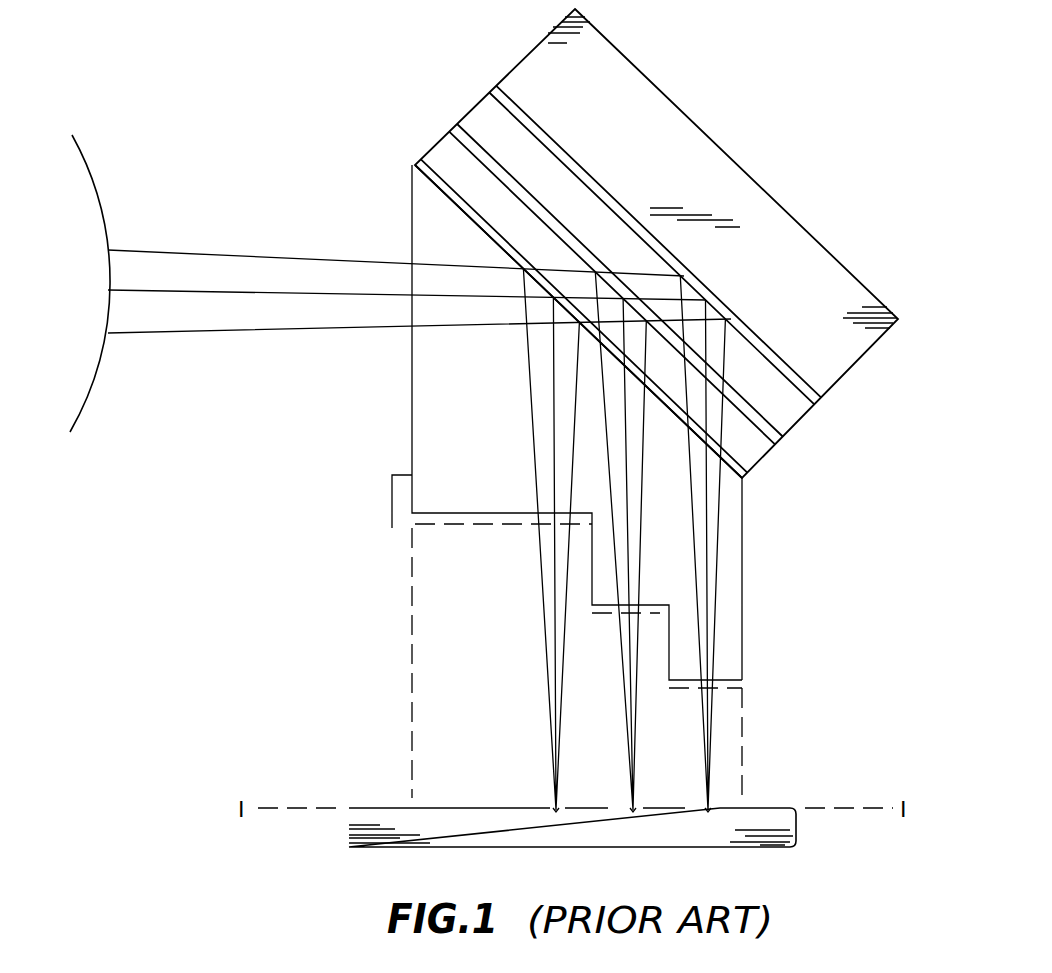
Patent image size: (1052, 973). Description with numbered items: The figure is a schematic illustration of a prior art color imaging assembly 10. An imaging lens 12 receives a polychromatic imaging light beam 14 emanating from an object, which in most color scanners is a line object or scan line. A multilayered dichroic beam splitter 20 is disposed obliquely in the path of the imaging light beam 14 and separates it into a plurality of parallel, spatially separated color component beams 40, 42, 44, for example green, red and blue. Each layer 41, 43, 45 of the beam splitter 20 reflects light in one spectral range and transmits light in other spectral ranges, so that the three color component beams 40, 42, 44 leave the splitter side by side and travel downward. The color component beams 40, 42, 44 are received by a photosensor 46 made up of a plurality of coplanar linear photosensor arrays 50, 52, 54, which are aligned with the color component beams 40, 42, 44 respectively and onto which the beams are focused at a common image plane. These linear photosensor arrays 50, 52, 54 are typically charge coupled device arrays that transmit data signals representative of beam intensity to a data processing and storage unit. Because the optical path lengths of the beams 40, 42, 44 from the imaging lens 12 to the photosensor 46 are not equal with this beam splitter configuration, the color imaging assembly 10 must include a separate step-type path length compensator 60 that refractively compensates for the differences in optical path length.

The color imaging assembly 10 is at (363, 58).
The imaging lens 12 is at (90, 396).
The polychromatic imaging light beam 14 is at (243, 317).
The multilayered dichroic beam splitter 20 is at (750, 186).
The layer 41 is at (432, 183).
The layer 43 is at (458, 143).
The layer 45 is at (497, 100).
The color component beam 40 is at (543, 477).
The color component beam 42 is at (625, 568).
The color component beam 44 is at (715, 520).
The step-type path length compensator 60 is at (428, 405).
The photosensor 46 is at (773, 815).
The linear photosensor array 50 is at (552, 808).
The linear photosensor array 52 is at (630, 808).
The linear photosensor array 54 is at (707, 810).